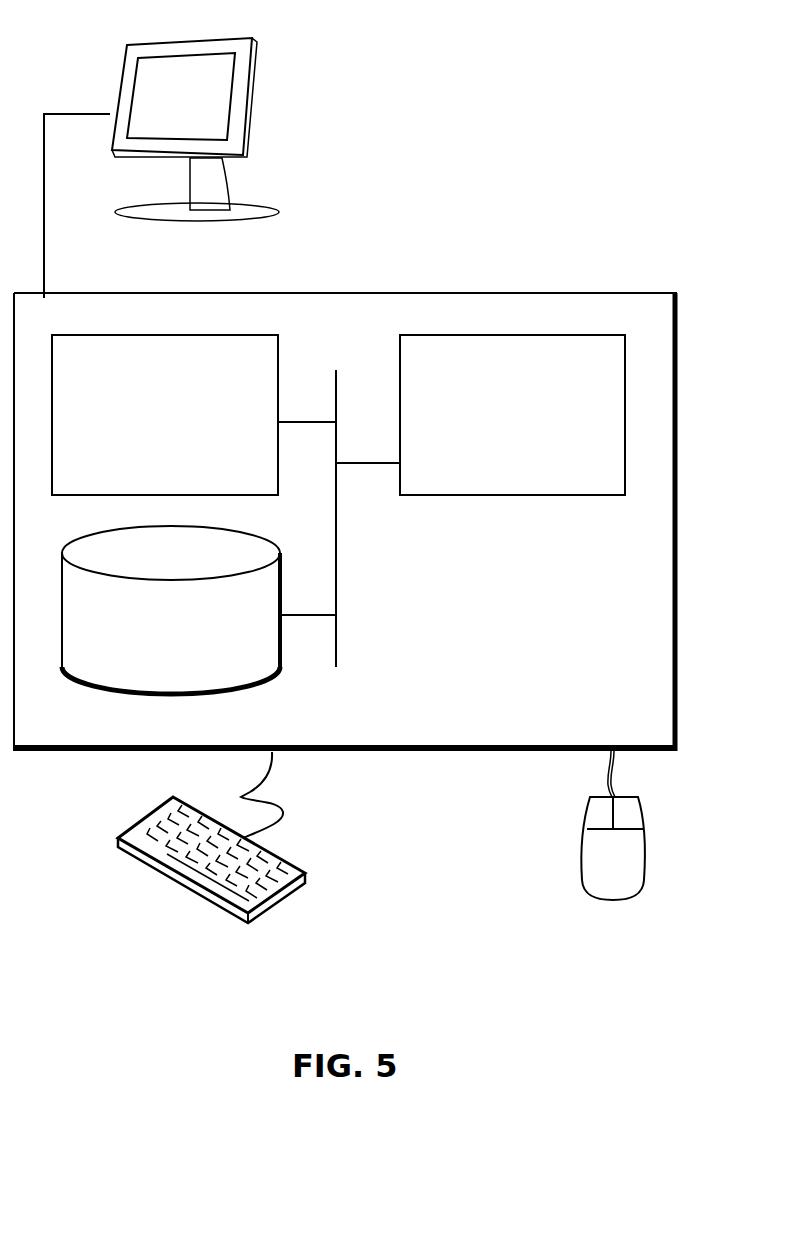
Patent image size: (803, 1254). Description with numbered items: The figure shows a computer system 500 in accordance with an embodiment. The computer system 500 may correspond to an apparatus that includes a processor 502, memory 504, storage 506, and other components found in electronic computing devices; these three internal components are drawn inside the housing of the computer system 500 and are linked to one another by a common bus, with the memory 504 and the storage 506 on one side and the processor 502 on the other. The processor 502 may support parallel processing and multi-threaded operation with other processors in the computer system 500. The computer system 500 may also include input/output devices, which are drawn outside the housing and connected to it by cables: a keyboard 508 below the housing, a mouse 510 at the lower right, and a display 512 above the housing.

The computer system 500 is at (390, 273).
The processor 502 is at (538, 429).
The memory 504 is at (186, 429).
The storage 506 is at (194, 639).
The keyboard 508 is at (137, 860).
The mouse 510 is at (634, 871).
The display 512 is at (161, 168).